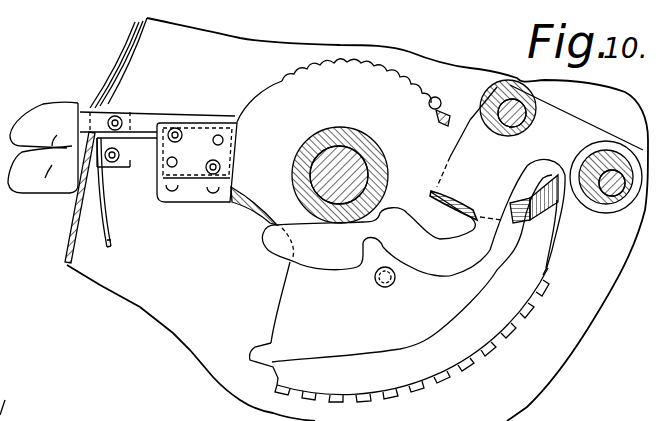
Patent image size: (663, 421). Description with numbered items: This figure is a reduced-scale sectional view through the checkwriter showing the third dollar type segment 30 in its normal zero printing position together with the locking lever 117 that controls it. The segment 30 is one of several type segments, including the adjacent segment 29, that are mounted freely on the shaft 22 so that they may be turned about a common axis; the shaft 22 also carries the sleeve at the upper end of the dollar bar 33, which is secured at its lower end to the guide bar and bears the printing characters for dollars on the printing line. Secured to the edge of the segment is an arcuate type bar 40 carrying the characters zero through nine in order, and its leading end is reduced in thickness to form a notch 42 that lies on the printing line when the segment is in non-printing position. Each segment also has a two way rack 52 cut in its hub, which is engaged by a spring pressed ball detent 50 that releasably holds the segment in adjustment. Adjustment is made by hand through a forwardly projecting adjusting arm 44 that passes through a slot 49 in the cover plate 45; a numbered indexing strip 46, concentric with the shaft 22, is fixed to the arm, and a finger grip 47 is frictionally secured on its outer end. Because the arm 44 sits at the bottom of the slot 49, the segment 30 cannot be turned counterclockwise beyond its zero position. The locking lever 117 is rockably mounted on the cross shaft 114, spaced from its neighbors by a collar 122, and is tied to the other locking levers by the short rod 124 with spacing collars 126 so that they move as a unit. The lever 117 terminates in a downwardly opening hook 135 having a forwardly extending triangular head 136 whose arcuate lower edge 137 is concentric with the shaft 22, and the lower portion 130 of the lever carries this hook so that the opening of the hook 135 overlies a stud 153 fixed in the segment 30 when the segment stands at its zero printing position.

The shaft 22 is at (320, 147).
The type segment 29 is at (241, 216).
The type segment 30 is at (251, 97).
The dollar bar 33 is at (327, 153).
The arcuate type bar 40 is at (447, 343).
The notch 42 is at (273, 373).
The adjusting arm 44 is at (147, 118).
The cover plate 45 is at (70, 220).
The indexing strip 46 is at (104, 212).
The finger grip 47 is at (50, 172).
The slot 49 is at (115, 58).
The ball detent 50 is at (453, 87).
The two way rack 52 is at (320, 68).
The cross shaft 114 is at (607, 182).
The lever 117 is at (605, 122).
The collar 122 is at (597, 150).
The rod 124 is at (503, 100).
The spacing collar 126 is at (505, 133).
The arm 130 is at (413, 242).
The hook 135 is at (383, 237).
The triangular head 136 is at (322, 248).
The lower edge 137 is at (303, 272).
The stud 153 is at (385, 288).